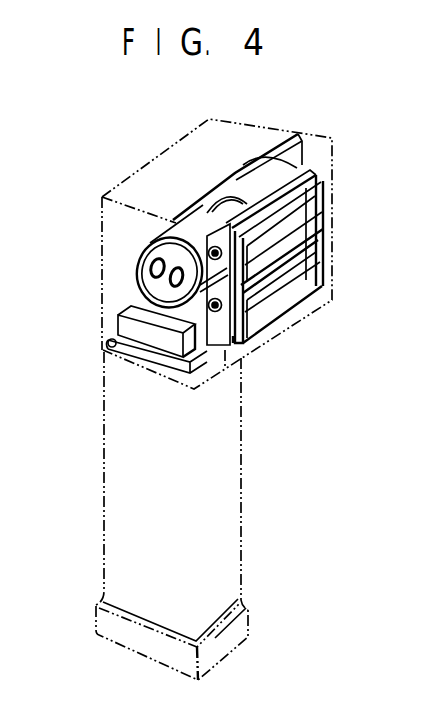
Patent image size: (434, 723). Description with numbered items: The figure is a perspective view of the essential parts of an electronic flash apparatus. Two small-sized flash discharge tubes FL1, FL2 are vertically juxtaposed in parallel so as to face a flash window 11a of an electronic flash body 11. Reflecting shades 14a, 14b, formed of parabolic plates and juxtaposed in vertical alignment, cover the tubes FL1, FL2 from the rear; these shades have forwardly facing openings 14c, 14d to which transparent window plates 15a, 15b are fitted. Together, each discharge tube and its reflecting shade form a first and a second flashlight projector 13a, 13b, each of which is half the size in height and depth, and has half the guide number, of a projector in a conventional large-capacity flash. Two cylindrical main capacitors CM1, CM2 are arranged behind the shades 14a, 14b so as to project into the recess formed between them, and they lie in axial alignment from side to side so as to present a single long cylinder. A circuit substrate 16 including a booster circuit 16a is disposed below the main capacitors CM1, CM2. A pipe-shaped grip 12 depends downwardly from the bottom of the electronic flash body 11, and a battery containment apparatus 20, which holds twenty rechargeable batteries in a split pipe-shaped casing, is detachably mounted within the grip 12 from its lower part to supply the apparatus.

The electronic flash body 11 is at (209, 121).
The flash window 11a is at (321, 239).
The grip 12 is at (108, 442).
The first flashlight projector 13a is at (302, 164).
The second flashlight projector 13b is at (213, 327).
The reflecting shade 14a is at (322, 168).
The reflecting shade 14b is at (240, 357).
The opening 14c is at (284, 228).
The opening 14d is at (290, 276).
The transparent window plate 15a is at (317, 213).
The transparent window plate 15b is at (273, 326).
The circuit substrate 16 is at (108, 344).
The booster circuit 16a is at (138, 312).
The battery containment apparatus 20 is at (246, 613).
The main capacitor CM1 is at (190, 228).
The main capacitor CM2 is at (245, 190).
The flash discharge tube FL1 is at (316, 190).
The flash discharge tube FL2 is at (280, 300).